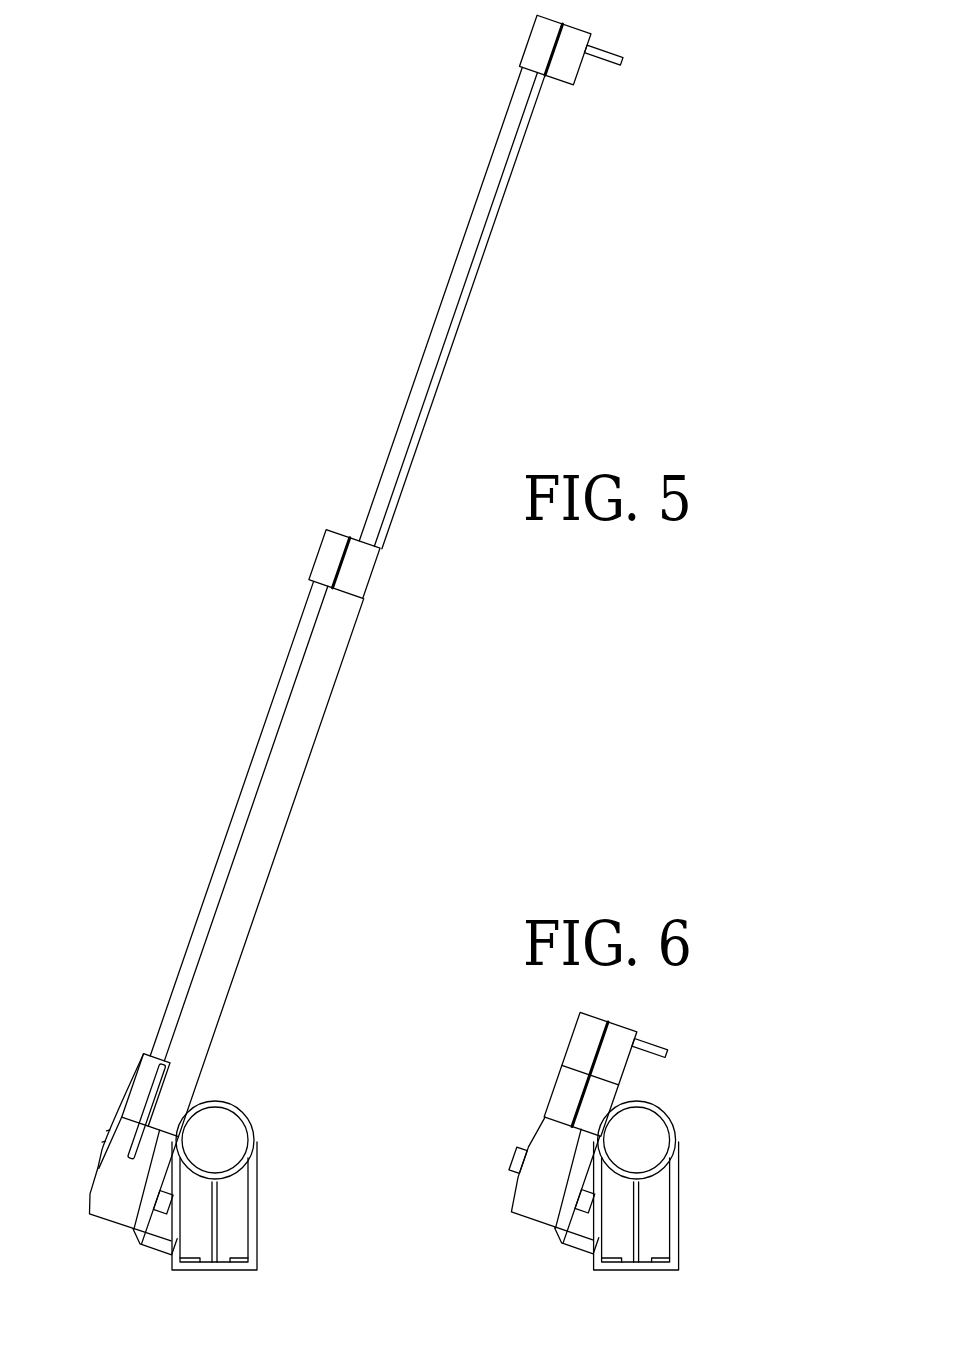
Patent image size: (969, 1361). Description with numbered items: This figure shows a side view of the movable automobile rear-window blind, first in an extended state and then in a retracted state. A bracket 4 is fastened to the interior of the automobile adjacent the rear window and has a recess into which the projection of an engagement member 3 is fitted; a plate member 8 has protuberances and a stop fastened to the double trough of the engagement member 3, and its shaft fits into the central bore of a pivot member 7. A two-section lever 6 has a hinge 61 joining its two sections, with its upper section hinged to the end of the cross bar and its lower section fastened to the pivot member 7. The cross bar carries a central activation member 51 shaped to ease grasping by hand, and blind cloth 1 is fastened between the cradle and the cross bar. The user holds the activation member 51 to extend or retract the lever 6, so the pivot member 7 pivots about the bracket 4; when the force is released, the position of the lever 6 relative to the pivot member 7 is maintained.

In FIG. 5, the blind cloth 1 is at (465, 310).
In FIG. 5, the engagement member 3 is at (158, 1241).
In FIG. 6, the engagement member 3 is at (580, 1240).
In FIG. 5, the bracket 4 is at (240, 1212).
In FIG. 6, the bracket 4 is at (660, 1212).
In FIG. 5, the two-section lever 6 is at (488, 193).
In FIG. 5, the pivot member 7 is at (112, 1207).
In FIG. 6, the pivot member 7 is at (534, 1206).
In FIG. 5, the plate member 8 is at (136, 1226).
In FIG. 6, the plate member 8 is at (558, 1225).
In FIG. 5, the activation member 51 is at (598, 62).
In FIG. 6, the activation member 51 is at (662, 1052).
In FIG. 5, the hinge 61 is at (325, 549).
In FIG. 6, the hinge 61 is at (562, 1088).